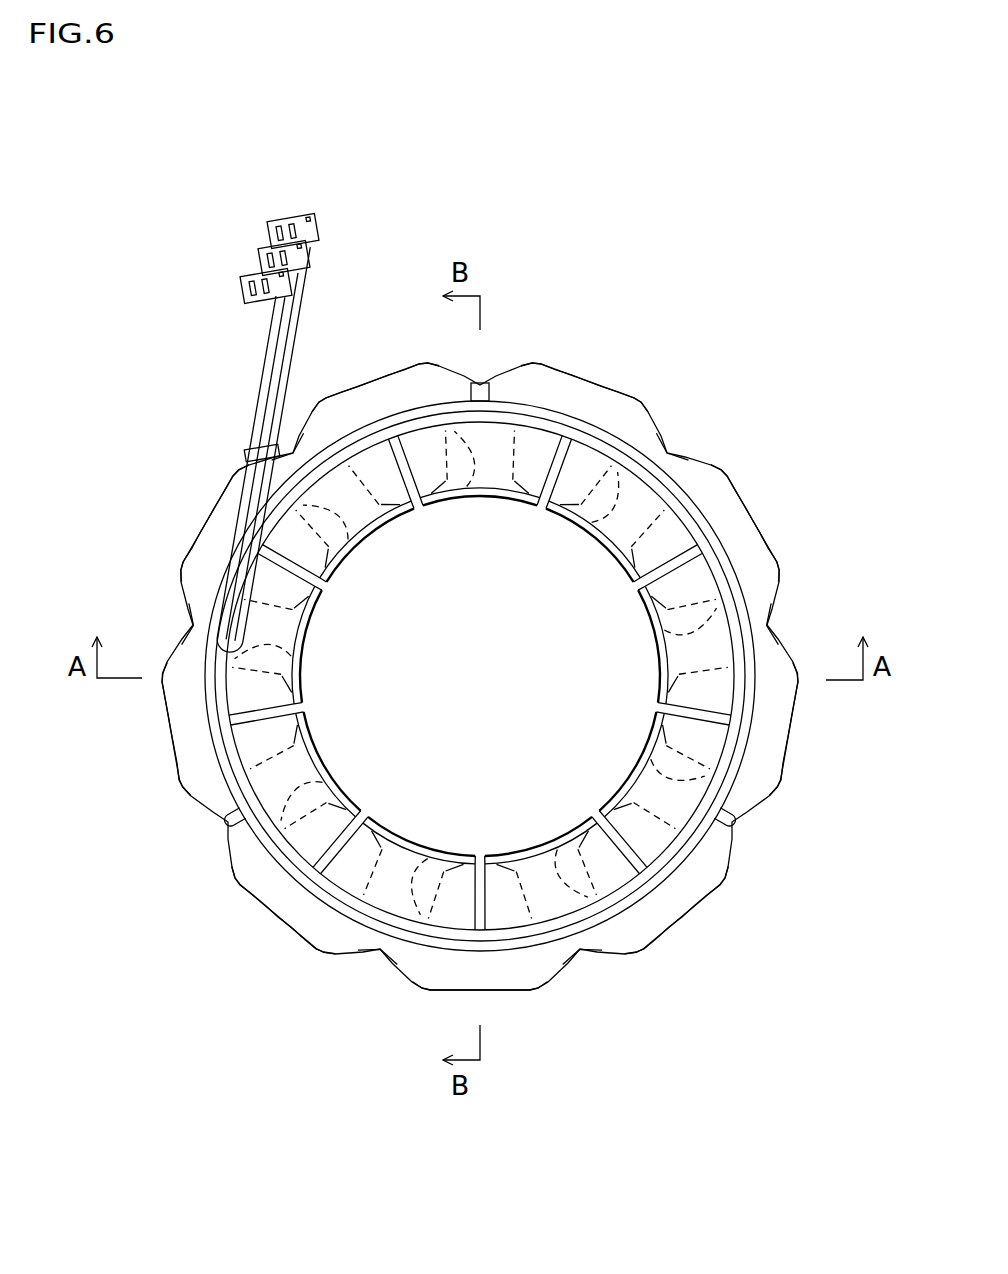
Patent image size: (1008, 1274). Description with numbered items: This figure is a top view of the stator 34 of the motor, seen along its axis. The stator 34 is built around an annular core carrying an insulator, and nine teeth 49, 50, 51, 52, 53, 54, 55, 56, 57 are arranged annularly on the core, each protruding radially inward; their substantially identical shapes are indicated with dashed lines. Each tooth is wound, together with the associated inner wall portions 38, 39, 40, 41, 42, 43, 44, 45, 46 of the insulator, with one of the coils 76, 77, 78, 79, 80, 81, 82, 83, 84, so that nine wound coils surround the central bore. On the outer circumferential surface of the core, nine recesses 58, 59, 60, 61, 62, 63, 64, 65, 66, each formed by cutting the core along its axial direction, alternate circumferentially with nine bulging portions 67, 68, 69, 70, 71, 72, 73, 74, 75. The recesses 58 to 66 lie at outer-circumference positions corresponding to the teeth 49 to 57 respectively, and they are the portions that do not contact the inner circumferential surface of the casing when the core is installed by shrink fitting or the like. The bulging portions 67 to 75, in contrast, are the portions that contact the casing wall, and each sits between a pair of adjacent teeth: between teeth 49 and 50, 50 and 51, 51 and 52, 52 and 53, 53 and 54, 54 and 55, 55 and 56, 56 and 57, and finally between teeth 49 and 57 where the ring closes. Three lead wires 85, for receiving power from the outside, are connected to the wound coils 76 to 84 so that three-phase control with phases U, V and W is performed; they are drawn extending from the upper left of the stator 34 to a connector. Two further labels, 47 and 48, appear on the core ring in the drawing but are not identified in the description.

The stator 34 is at (700, 322).
The inner wall portion 38 is at (480, 462).
The inner wall portion 39 is at (612, 560).
The inner wall portion 40 is at (660, 690).
The inner wall portion 41 is at (632, 786).
The inner wall portion 42 is at (505, 850).
The inner wall portion 43 is at (393, 830).
The inner wall portion 44 is at (320, 740).
The inner wall portion 45 is at (308, 627).
The inner wall portion 46 is at (343, 513).
The stator core 47 is at (727, 768).
The insulator 48 is at (350, 915).
The tooth 49 is at (470, 500).
The tooth 50 is at (570, 540).
The tooth 51 is at (660, 640).
The tooth 52 is at (625, 752).
The tooth 53 is at (545, 830).
The tooth 54 is at (440, 830).
The tooth 55 is at (345, 755).
The tooth 56 is at (322, 666).
The tooth 57 is at (377, 552).
The recess 58 is at (497, 362).
The recess 59 is at (678, 442).
The recess 60 is at (786, 621).
The recess 61 is at (752, 838).
The recess 62 is at (590, 976).
The recess 63 is at (373, 970).
The recess 64 is at (213, 832).
The recess 65 is at (182, 623).
The recess 66 is at (296, 432).
The bulging portion 67 is at (612, 385).
The bulging portion 68 is at (757, 523).
The bulging portion 69 is at (778, 735).
The bulging portion 70 is at (683, 920).
The bulging portion 71 is at (510, 1000).
The bulging portion 72 is at (290, 927).
The bulging portion 73 is at (168, 733).
The bulging portion 74 is at (200, 537).
The bulging portion 75 is at (375, 378).
The coil 76 is at (530, 440).
The coil 77 is at (668, 510).
The coil 78 is at (713, 684).
The coil 79 is at (648, 838).
The coil 80 is at (604, 874).
The coil 81 is at (447, 907).
The coil 82 is at (300, 842).
The coil 83 is at (250, 683).
The coil 84 is at (300, 520).
The lead wire 85 is at (308, 282).